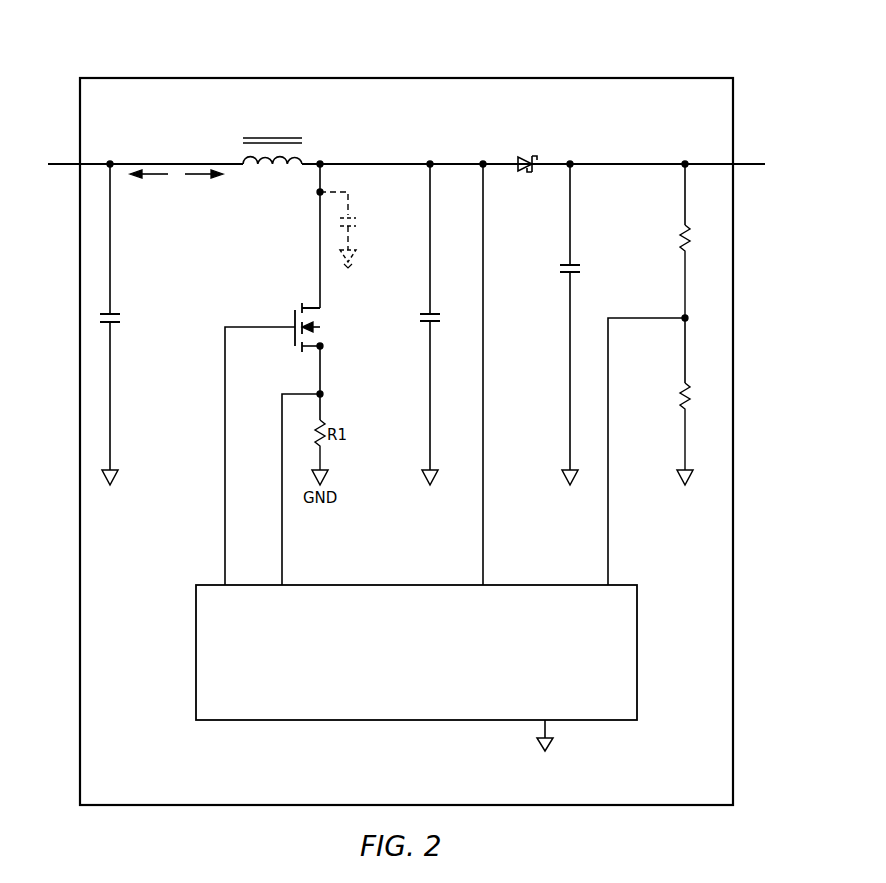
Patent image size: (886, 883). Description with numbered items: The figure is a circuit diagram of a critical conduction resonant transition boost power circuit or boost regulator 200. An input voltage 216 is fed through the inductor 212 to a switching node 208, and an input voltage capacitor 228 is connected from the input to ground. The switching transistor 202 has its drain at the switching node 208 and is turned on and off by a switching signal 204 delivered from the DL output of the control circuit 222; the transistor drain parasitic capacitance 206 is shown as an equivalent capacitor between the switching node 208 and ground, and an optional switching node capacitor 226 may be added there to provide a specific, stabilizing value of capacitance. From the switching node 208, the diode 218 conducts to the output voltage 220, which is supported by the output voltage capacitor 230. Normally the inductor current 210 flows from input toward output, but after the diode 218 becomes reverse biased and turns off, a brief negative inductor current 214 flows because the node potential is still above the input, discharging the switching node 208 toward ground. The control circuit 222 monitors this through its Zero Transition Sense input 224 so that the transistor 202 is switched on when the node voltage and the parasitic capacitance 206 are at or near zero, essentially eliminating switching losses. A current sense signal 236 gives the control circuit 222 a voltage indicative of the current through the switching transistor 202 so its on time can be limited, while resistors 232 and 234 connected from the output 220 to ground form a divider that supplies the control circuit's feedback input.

The boost regulator 200 is at (528, 77).
The switching transistor 202 is at (294, 337).
The switching signal 204 is at (222, 580).
The transistor drain parasitic capacitance 206 is at (360, 226).
The switching node 208 is at (322, 161).
The inductor current IL 210 is at (200, 176).
The L1 inductor 212 is at (282, 164).
The negative inductor current 214 is at (152, 176).
The input voltage VIN 216 is at (64, 163).
The D1 diode 218 is at (531, 172).
The output voltage VOUT 220 is at (750, 163).
The control circuit 222 is at (314, 721).
The Zero Transition Sense (ZTS) 224 is at (486, 580).
The switching node capacitor 226 is at (420, 316).
The input voltage capacitor 228 is at (122, 318).
The output voltage capacitor 230 is at (560, 269).
The resistor R2 232 is at (680, 238).
The resistor R3 234 is at (680, 391).
The current sense signal 236 is at (284, 580).